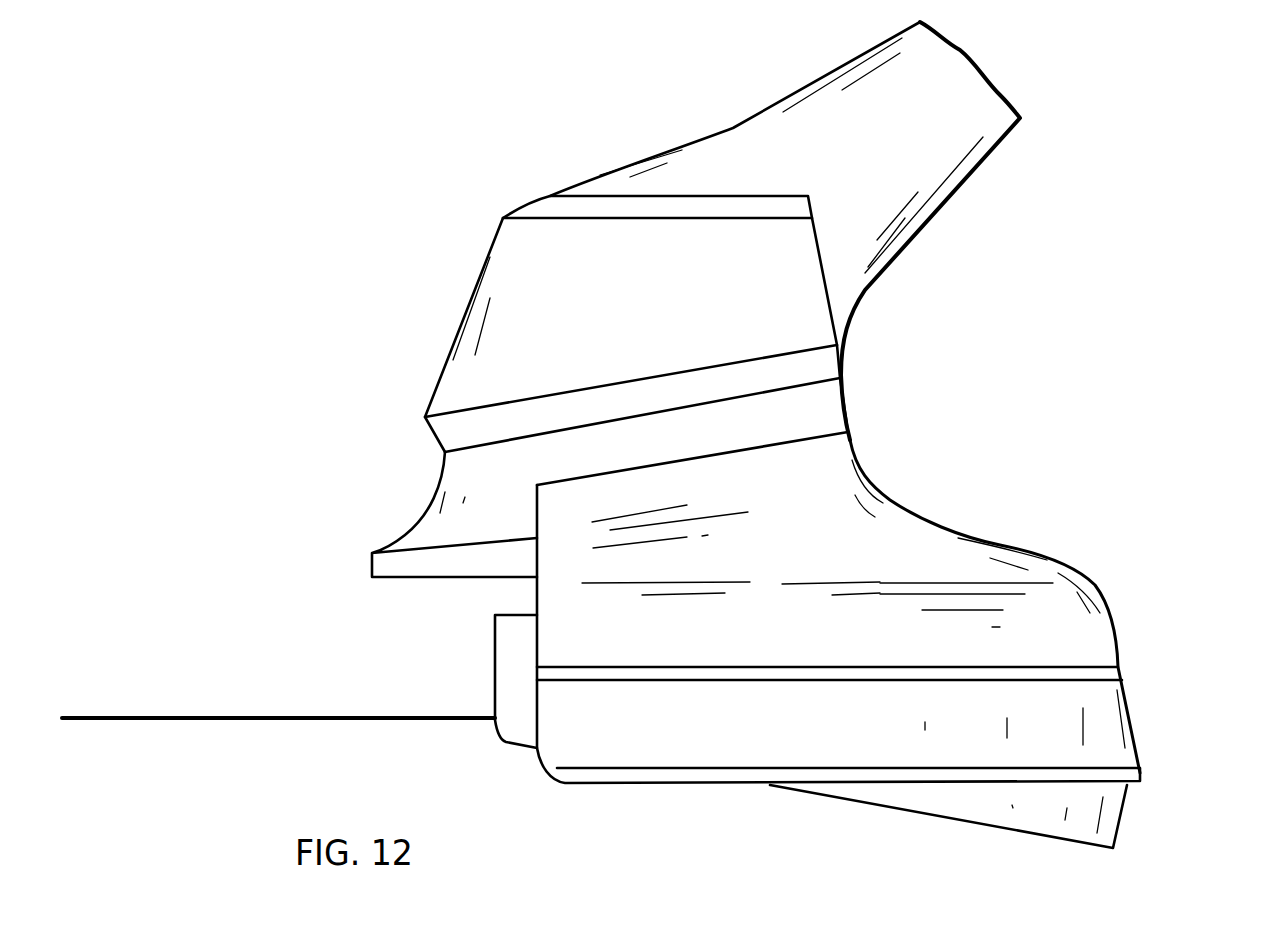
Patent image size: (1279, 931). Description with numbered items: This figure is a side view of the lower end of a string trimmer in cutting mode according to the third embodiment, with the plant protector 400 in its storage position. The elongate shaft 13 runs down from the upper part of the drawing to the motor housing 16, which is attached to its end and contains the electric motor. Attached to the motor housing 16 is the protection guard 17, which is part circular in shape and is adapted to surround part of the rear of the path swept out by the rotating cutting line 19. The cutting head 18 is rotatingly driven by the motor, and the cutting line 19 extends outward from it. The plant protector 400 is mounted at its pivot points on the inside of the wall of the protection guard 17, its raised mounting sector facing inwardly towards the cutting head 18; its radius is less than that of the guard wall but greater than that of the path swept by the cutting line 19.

The elongate shaft 13 is at (902, 162).
The motor housing 16 is at (616, 294).
The protection guard 17 is at (822, 743).
The cutting head 18 is at (503, 727).
The cutting line 19 is at (260, 717).
The plant protector 400 is at (1110, 808).